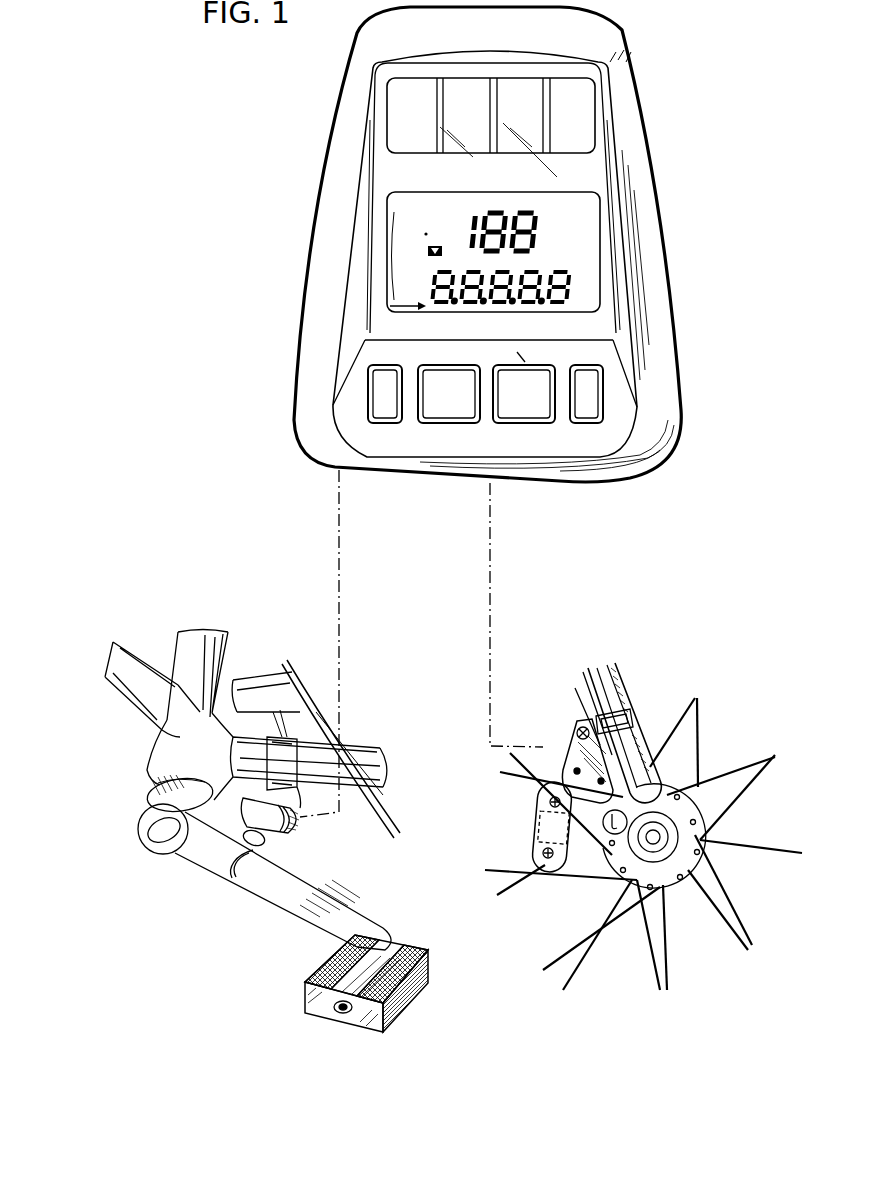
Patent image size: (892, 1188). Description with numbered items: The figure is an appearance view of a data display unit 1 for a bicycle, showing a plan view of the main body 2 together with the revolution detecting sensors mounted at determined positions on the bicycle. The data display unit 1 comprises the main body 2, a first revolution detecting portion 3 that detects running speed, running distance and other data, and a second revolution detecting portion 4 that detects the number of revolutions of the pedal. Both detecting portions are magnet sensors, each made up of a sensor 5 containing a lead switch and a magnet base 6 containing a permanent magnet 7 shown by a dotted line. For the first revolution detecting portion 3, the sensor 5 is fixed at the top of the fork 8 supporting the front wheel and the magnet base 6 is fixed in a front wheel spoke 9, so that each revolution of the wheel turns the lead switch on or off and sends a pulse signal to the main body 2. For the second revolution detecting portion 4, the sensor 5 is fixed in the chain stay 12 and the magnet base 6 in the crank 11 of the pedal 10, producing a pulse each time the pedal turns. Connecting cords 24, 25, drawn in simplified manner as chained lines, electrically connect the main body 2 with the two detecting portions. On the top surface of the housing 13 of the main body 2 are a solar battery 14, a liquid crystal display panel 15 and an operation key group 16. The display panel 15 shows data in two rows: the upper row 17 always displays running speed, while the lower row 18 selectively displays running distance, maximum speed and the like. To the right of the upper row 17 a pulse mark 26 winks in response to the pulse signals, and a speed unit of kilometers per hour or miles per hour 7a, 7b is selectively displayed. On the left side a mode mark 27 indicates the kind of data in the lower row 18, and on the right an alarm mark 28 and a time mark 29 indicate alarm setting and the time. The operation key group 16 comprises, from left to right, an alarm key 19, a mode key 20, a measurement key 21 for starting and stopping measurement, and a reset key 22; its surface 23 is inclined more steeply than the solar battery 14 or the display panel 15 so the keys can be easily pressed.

The data display unit 1 is at (724, 505).
The main body 2 is at (679, 471).
The first revolution detecting portion 3 is at (555, 695).
The second revolution detecting portion 4 is at (320, 795).
The sensor 5 is at (293, 828).
The magnet base 6 is at (247, 836).
The permanent magnet 7 is at (533, 815).
The km/h indicator 7a is at (592, 237).
The mile/h indicator 7b is at (592, 252).
The fork 8 is at (620, 682).
The front wheel spoke 9 is at (738, 767).
The pedal 10 is at (396, 1017).
The crank 11 is at (332, 898).
The chain stay 12 is at (348, 787).
The housing 13 is at (666, 329).
The solar battery 14 is at (584, 109).
The liquid crystal display panel 15 is at (600, 283).
The operation key group 16 is at (485, 448).
The upper row 17 is at (445, 206).
The lower row 18 is at (390, 306).
The alarm key 19 is at (385, 418).
The mode key 20 is at (450, 412).
The measurement key 21 is at (516, 418).
The reset key 22 is at (586, 440).
The surface of the operation key group 23 is at (622, 424).
The connecting cord 24 is at (490, 662).
The connecting cord 25 is at (341, 597).
The pulse mark 26 is at (583, 212).
The mode mark 27 is at (430, 251).
The alarm mark 28 is at (392, 198).
The time mark 29 is at (398, 270).